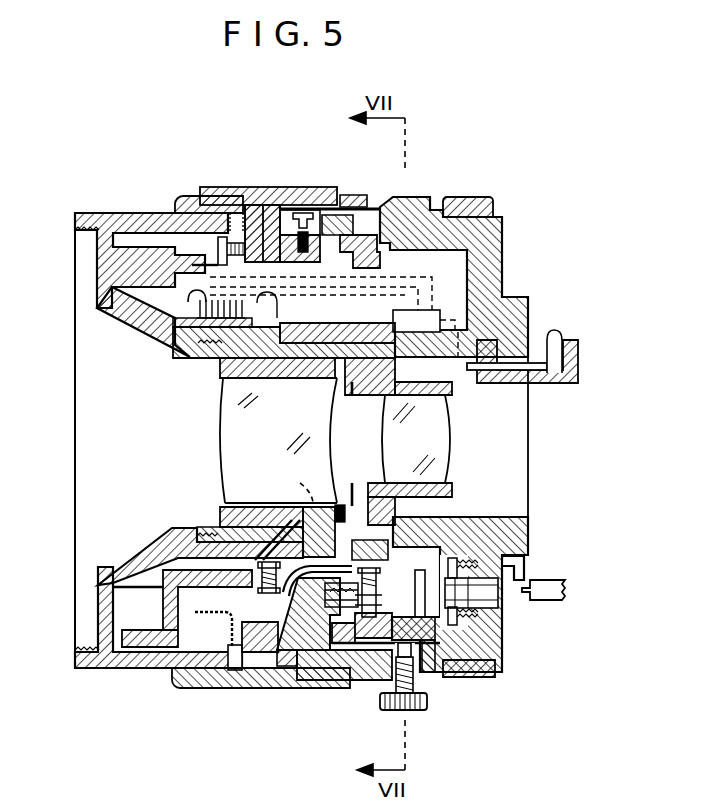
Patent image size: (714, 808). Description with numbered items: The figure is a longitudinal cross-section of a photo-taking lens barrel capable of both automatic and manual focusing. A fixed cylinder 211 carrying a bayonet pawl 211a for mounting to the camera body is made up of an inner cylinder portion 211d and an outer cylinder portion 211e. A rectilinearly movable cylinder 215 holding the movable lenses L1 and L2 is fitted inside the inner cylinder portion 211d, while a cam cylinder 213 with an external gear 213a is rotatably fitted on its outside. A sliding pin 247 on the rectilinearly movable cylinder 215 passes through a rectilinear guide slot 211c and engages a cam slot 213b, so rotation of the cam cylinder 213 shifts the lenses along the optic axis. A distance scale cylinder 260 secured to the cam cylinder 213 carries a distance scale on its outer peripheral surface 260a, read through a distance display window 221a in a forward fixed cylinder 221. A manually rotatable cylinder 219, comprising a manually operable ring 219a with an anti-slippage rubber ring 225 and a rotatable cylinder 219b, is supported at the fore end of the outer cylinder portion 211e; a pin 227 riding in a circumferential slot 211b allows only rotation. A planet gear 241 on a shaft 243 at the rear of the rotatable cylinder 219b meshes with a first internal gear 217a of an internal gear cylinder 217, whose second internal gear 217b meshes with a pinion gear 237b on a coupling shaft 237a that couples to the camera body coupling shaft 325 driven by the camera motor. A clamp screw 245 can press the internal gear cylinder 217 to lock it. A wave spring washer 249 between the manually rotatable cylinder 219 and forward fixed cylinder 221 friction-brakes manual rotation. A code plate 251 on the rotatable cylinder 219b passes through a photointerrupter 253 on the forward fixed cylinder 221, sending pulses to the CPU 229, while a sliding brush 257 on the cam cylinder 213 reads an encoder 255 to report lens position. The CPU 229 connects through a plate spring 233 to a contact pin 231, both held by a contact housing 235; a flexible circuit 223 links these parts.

The fixed cylinder 211 is at (500, 245).
The bayonet pawl 211a is at (525, 568).
The circumferential slot 211b is at (345, 195).
The rectilinear guide slot 211c is at (352, 503).
The inner cylinder portion 211d is at (465, 540).
The outer cylinder portion 211e is at (445, 210).
The cam cylinder 213 is at (233, 527).
The external gear 213a is at (238, 622).
The cam slot 213b is at (297, 516).
The rectilinearly movable cylinder 215 is at (220, 367).
The internal gear cylinder 217 is at (298, 722).
The first internal gear 217a is at (372, 655).
The second internal gear 217b is at (380, 655).
The manually rotatable cylinder 219 is at (304, 108).
The manually operable ring 219a is at (288, 205).
The rotatable cylinder 219b is at (250, 212).
The forward fixed cylinder 221 is at (110, 283).
The distance display window 221a is at (165, 660).
The flexible printed circuit 223 is at (333, 209).
The anti-slippage rubber ring 225 is at (330, 188).
The pin 227 is at (302, 213).
The CPU 229 is at (440, 313).
The contact pin 231 is at (553, 337).
The plate spring 233 is at (537, 380).
The contact housing 235 is at (576, 360).
The coupling shaft 237a is at (500, 618).
The pinion gear 237b is at (502, 655).
The planet gear 241 is at (380, 620).
The shaft 243 is at (297, 580).
The clamp screw 245 is at (420, 706).
The sliding pin 247 is at (305, 500).
The wave spring washer 249 is at (240, 217).
The code plate 251 is at (222, 247).
The photointerrupter 253 is at (200, 265).
The encoder 255 is at (175, 323).
The sliding brush 257 is at (187, 290).
The distance scale cylinder 260 is at (178, 597).
The outer peripheral surface 260a is at (140, 668).
The coupling shaft 325 is at (557, 580).
The movable lens L1 is at (223, 432).
The movable lens L2 is at (442, 427).